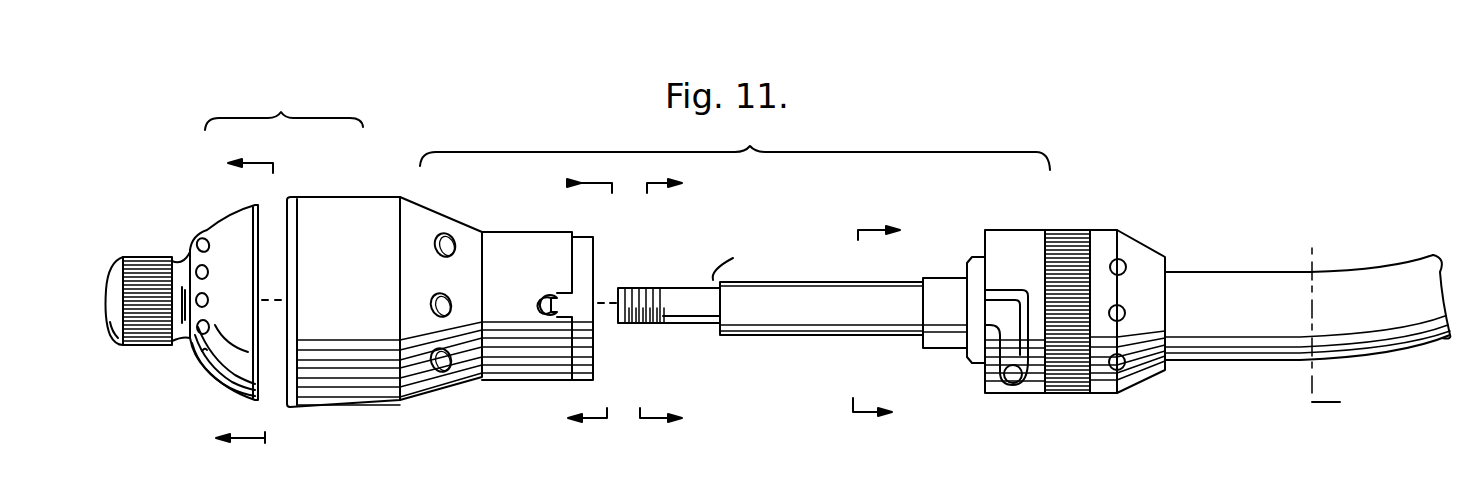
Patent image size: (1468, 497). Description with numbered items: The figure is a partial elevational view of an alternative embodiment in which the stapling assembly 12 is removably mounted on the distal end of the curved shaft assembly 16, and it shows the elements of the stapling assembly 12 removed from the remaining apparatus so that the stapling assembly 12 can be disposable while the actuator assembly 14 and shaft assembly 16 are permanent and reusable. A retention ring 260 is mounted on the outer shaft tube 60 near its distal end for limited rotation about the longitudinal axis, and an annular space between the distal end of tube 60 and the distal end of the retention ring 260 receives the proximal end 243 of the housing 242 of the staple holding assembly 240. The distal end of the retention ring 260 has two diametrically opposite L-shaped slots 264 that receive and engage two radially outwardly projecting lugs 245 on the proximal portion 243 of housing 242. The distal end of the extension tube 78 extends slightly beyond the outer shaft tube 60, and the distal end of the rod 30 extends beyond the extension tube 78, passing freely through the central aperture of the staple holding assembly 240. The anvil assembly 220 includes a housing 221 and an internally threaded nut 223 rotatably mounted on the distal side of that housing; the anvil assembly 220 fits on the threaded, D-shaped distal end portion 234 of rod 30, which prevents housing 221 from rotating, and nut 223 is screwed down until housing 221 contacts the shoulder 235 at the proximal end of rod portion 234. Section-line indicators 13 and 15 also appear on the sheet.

The stapling assembly 12 is at (566, 254).
The section line 13 is at (574, 301).
The actuator assembly 14 is at (674, 301).
The section line 15 is at (243, 304).
The curved shaft assembly 16 is at (1391, 364).
The rod 30 is at (782, 332).
The outer shaft tube 60 is at (1260, 355).
The extension tube 78 is at (943, 344).
The anvil assembly 220 is at (200, 202).
The housing 221 is at (228, 372).
The internally threaded nut 223 is at (139, 262).
The threaded distal end portion 234 is at (663, 315).
The shoulder 235 is at (738, 260).
The staple holding assembly 240 is at (371, 181).
The housing 242 is at (355, 407).
The proximal end 243 is at (510, 375).
The lugs 245 is at (541, 296).
The retention ring 260 is at (1097, 394).
The L-shaped slots 264 is at (1003, 298).